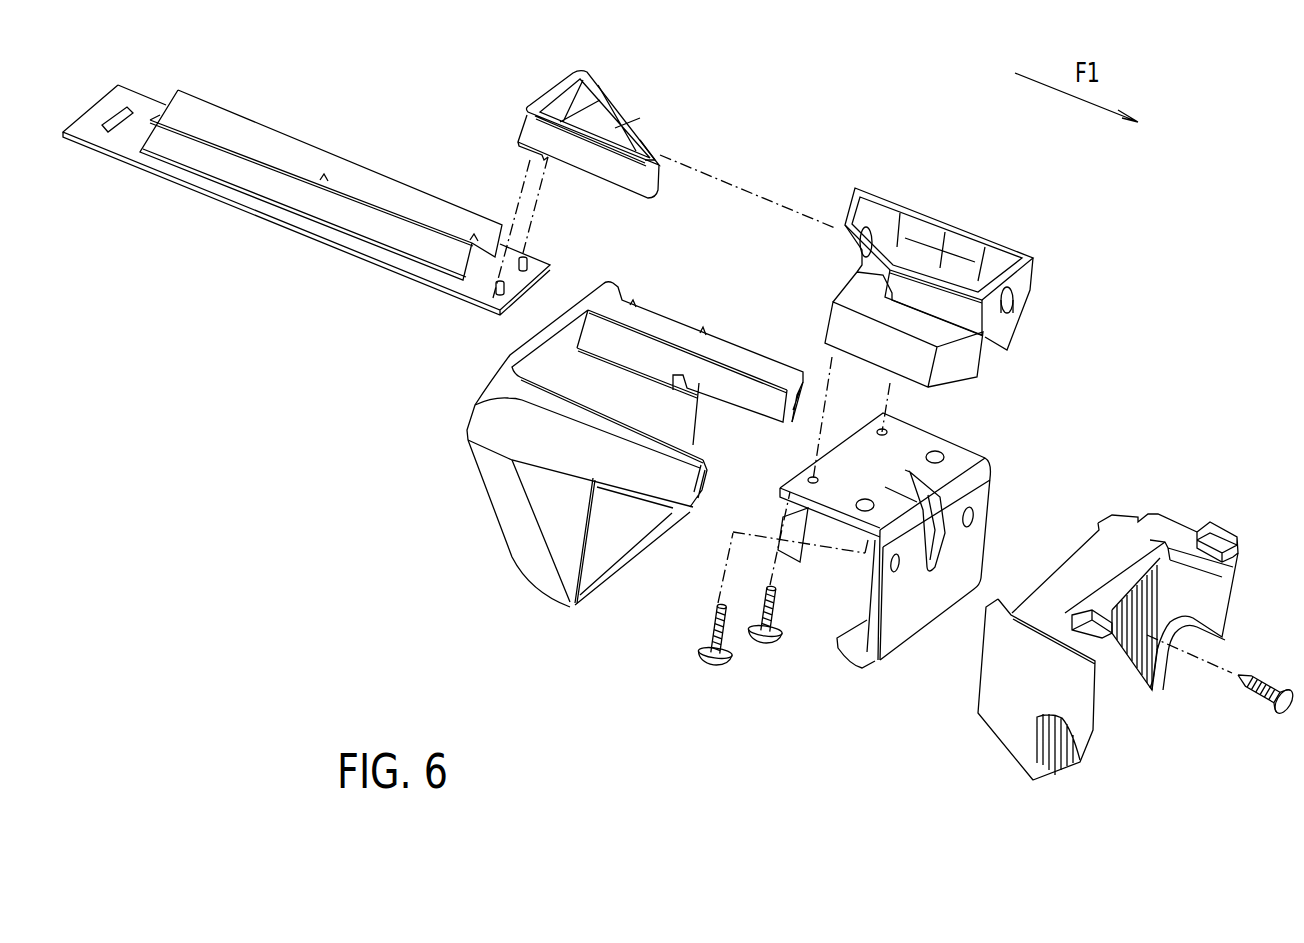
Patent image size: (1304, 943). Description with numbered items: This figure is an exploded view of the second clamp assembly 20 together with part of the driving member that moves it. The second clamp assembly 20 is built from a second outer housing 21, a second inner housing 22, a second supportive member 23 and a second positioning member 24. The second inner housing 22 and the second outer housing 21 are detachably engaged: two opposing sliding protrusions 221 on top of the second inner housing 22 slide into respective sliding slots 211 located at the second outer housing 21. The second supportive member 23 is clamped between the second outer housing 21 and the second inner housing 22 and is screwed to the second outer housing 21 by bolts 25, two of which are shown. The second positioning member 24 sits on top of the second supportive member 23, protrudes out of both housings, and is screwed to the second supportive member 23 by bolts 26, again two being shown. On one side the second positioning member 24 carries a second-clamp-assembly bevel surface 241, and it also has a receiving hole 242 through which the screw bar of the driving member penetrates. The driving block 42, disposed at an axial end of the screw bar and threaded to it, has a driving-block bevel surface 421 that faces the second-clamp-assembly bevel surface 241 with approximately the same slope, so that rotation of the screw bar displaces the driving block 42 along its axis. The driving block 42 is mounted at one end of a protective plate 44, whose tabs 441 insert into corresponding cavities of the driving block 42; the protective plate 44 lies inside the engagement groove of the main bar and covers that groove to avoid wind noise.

The second clamp assembly 20 is at (1279, 258).
The second outer housing 21 is at (500, 510).
The sliding slots 211 is at (797, 423).
The second inner housing 22 is at (990, 718).
The sliding protrusions 221 is at (1083, 618).
The second supportive member 23 is at (978, 542).
The second positioning member 24 is at (955, 222).
The second-clamp-assembly bevel surface 241 is at (855, 215).
The receiving hole 242 is at (1018, 292).
The bolts 25 is at (1255, 707).
The bolts 26 is at (715, 663).
The driving block 42 is at (560, 93).
The driving-block bevel surface 421 is at (643, 132).
The protective plate 44 is at (243, 203).
The tabs 441 is at (495, 295).